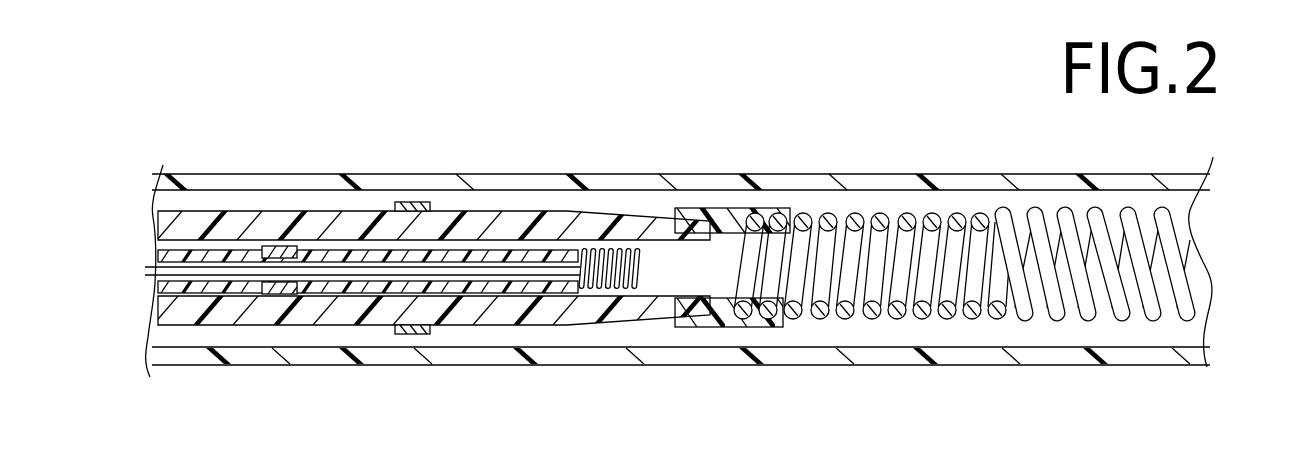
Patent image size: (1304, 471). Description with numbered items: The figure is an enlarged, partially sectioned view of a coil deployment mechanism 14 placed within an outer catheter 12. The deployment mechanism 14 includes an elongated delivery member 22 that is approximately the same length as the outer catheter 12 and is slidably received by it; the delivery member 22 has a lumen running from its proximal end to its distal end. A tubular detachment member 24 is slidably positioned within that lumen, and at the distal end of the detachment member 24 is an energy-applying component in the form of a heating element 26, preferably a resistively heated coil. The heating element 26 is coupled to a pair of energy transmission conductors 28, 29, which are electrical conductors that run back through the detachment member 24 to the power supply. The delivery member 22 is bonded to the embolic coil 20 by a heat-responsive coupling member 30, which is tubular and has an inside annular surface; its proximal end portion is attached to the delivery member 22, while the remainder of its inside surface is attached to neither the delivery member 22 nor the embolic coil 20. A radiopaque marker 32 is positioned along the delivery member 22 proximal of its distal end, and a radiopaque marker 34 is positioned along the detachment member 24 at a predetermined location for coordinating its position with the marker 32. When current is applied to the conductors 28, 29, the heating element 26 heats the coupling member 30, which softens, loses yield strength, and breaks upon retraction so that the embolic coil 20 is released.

The outer catheter 12 is at (290, 177).
The coil deployment mechanism 14 is at (244, 300).
The embolic coil 20 is at (1113, 219).
The elongated delivery member 22 is at (482, 222).
The tubular detachment member 24 is at (319, 292).
The heating element 26 is at (617, 288).
The energy transmission conductor 28 is at (180, 265).
The energy transmission conductor 29 is at (498, 274).
The heat-responsive coupling member 30 is at (732, 327).
The radiopaque marker 32 is at (407, 203).
The radiopaque marker 34 is at (277, 246).